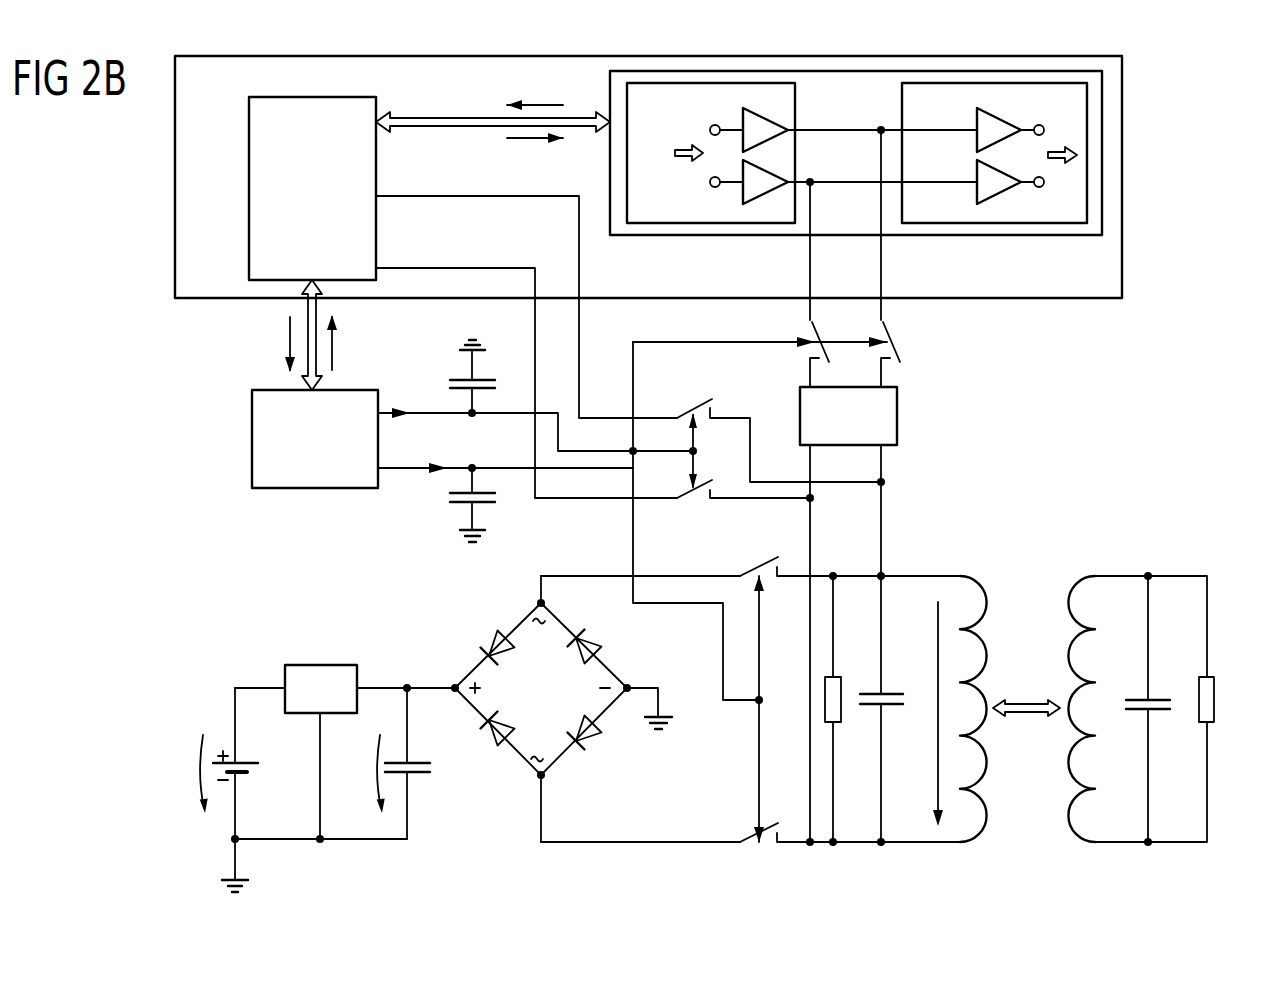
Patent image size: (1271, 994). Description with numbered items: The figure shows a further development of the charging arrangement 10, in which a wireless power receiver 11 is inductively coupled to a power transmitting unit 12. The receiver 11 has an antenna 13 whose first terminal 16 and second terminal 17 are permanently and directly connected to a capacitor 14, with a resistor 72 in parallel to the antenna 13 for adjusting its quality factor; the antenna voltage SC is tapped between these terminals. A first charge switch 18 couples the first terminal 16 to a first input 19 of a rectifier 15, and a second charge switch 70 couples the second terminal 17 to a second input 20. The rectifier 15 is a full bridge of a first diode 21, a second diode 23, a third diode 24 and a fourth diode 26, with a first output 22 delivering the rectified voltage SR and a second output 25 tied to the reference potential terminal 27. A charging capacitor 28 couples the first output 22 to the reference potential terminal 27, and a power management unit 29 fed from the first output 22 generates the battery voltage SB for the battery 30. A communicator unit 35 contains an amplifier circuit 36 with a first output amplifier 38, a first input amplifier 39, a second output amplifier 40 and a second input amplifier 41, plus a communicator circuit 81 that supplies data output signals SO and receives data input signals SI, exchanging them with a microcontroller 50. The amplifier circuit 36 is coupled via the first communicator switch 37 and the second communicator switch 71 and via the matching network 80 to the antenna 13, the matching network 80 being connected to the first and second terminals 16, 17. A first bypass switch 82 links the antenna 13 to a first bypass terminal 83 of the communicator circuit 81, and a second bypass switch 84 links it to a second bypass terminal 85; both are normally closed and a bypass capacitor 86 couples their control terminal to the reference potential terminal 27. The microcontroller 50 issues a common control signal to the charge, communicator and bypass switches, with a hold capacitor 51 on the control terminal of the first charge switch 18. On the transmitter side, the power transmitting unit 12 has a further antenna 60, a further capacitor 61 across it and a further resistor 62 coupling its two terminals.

The charging arrangement 10 is at (75, 240).
The wireless power receiver 11 is at (972, 558).
The power transmitting unit 12 is at (1108, 558).
The antenna 13 is at (987, 593).
The capacitor 14 is at (892, 690).
The rectifier 15 is at (545, 729).
The first terminal of the antenna 16 is at (881, 845).
The second terminal of the antenna 17 is at (882, 568).
The first charge switch 18 is at (760, 848).
The first input of the rectifier 19 is at (536, 776).
The second input of the rectifier 20 is at (547, 604).
The first diode 21 is at (486, 737).
The first output of the rectifier 22 is at (455, 684).
The second diode 23 is at (495, 632).
The third diode 24 is at (590, 740).
The second output of the rectifier 25 is at (630, 684).
The fourth diode 26 is at (572, 652).
The reference potential terminal 27 is at (462, 348).
The charging capacitor 28 is at (420, 775).
The power management unit 29 is at (320, 665).
The battery 30 is at (245, 762).
The communicator unit 35 is at (1122, 110).
The amplifier circuit 36 is at (1102, 178).
The first communicator switch 37 is at (900, 348).
The first output amplifier 38 is at (740, 118).
The first input amplifier 39 is at (975, 118).
The second output amplifier 40 is at (740, 194).
The second input amplifier 41 is at (975, 194).
The microcontroller 50 is at (252, 441).
The hold capacitor 51 is at (450, 497).
The further antenna 60 is at (1067, 816).
The further capacitor 61 is at (1158, 700).
The further resistor 62 is at (1210, 676).
The second charge switch 70 is at (766, 558).
The second communicator switch 71 is at (810, 332).
The resistor 72 is at (838, 672).
The matching network 80 is at (897, 415).
The communicator circuit 81 is at (249, 190).
The first bypass switch 82 is at (702, 506).
The first bypass terminal 83 is at (378, 268).
The second bypass switch 84 is at (700, 402).
The second bypass terminal 85 is at (378, 196).
The bypass capacitor 86 is at (450, 388).